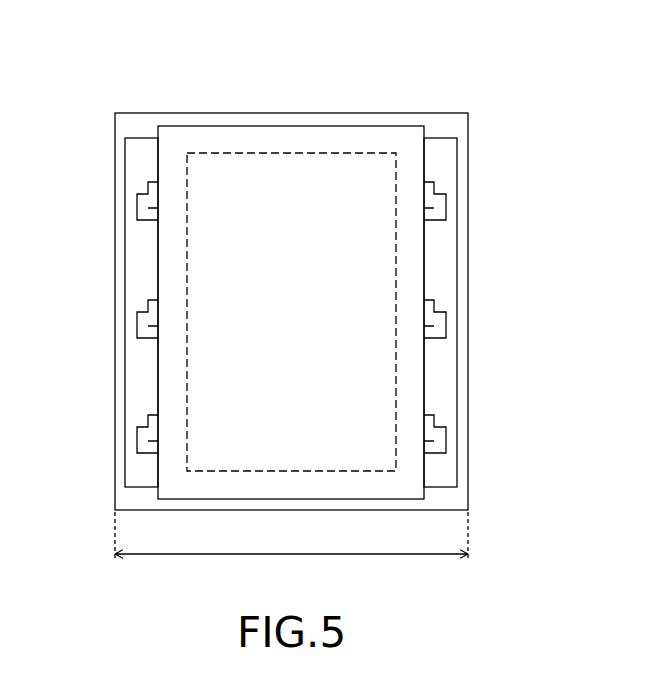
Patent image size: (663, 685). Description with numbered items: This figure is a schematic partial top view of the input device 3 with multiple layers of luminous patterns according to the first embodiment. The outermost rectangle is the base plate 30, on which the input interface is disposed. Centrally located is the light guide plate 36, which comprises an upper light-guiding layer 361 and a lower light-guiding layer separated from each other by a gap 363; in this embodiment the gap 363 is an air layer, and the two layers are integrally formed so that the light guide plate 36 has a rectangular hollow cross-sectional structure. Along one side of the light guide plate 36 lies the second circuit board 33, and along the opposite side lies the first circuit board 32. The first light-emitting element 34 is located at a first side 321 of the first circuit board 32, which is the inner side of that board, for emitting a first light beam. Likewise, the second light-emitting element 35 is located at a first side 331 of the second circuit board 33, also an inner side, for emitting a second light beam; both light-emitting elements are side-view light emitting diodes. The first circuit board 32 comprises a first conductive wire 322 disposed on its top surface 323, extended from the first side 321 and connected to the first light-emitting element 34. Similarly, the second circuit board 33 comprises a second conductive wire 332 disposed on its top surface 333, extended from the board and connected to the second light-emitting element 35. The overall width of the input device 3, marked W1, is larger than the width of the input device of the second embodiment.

The input device 3 is at (432, 37).
The base plate 30 is at (437, 125).
The light guide plate 36 is at (272, 129).
The upper light-guiding layer 361 is at (198, 130).
The gap 363 is at (322, 158).
The second circuit board 33 is at (126, 166).
The second conductive wire 332 is at (138, 207).
The top surface of the second circuit board 333 is at (140, 255).
The second light-emitting element 35 is at (153, 298).
The first side of the second circuit board 331 is at (158, 377).
The first circuit board 32 is at (447, 163).
The first conductive wire 322 is at (447, 208).
The top surface of the first circuit board 323 is at (442, 257).
The first light-emitting element 34 is at (427, 303).
The first side of the first circuit board 321 is at (427, 377).